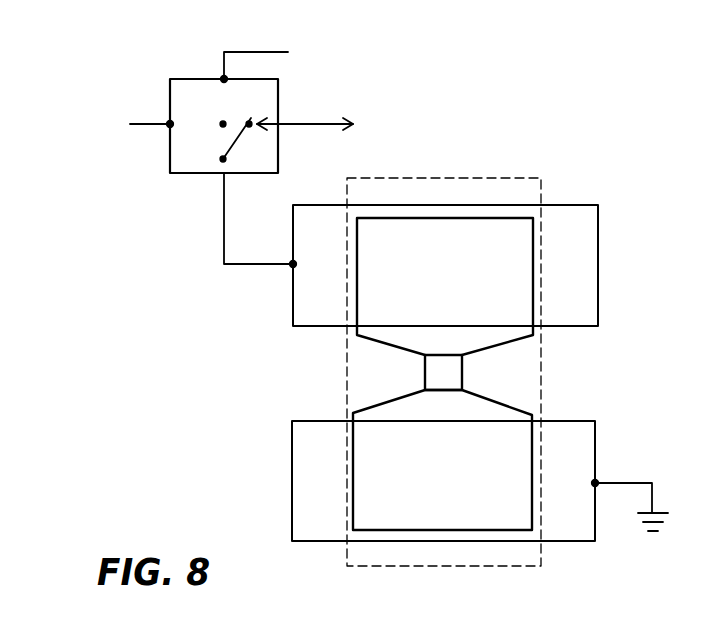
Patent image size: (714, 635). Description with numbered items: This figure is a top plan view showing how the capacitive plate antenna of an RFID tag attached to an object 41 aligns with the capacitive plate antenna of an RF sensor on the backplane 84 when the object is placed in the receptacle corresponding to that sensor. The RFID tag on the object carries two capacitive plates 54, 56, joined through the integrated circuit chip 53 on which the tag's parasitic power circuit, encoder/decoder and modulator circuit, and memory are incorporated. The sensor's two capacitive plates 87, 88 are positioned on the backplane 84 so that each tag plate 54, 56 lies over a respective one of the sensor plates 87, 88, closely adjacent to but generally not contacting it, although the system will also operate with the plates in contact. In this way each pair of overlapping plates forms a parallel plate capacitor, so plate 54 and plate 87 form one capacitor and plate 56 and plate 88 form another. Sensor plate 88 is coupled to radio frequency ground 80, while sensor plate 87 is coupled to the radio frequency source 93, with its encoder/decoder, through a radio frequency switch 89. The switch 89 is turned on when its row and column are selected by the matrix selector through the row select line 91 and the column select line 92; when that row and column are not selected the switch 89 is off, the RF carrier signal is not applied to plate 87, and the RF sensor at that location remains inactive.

The object 41 is at (347, 352).
The integrated circuit chip 53 is at (462, 372).
The capacitive plate 54 is at (518, 270).
The capacitive plate 56 is at (492, 507).
The radio frequency ground 80 is at (655, 495).
The backplane 84 is at (674, 354).
The capacitive plate 87 is at (587, 228).
The capacitive plate 88 is at (587, 443).
The radio frequency switch 89 is at (150, 180).
The row select line 91 is at (223, 63).
The column select line 92 is at (153, 118).
The radio frequency source 93 is at (297, 124).